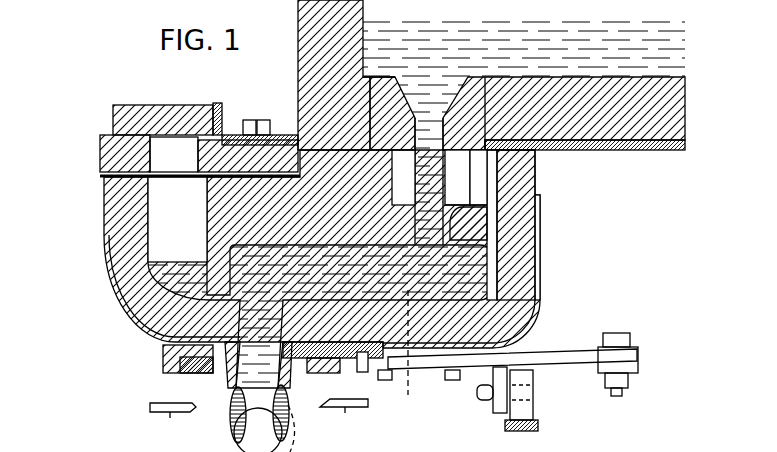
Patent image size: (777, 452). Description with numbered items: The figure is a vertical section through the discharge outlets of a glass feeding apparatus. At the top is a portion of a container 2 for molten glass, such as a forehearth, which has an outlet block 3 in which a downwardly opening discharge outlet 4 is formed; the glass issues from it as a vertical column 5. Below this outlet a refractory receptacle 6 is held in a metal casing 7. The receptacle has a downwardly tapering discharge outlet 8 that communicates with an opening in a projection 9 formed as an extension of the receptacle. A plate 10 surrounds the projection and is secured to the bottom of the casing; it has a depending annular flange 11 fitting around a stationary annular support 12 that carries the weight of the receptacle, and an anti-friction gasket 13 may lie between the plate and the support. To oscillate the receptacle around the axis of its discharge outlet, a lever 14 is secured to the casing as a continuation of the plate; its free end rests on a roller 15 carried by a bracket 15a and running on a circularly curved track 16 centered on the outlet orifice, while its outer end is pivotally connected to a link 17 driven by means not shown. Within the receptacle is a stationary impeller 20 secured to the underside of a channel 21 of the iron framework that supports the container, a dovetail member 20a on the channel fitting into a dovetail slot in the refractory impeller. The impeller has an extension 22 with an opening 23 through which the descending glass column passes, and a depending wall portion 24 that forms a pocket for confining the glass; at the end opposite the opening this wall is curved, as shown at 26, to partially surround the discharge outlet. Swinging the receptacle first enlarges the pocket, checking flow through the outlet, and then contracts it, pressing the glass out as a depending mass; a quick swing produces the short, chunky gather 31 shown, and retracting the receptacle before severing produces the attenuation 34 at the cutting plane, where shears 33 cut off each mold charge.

The container 2 is at (653, 110).
The outlet block 3 is at (417, 122).
The discharge outlet 4 is at (405, 120).
The vertical column of glass 5 is at (446, 172).
The receptacle 6 is at (540, 212).
The metal casing 7 is at (541, 288).
The discharge outlet 8 is at (168, 341).
The projection 9 is at (228, 382).
The plate 10 is at (362, 372).
The depending annular flange 11 is at (170, 368).
The stationary annular support 12 is at (200, 374).
The gasket 13 is at (313, 373).
The lever 14 is at (573, 368).
The roller 15 is at (533, 411).
The bracket 15a is at (480, 410).
The circularly curved track 16 is at (520, 431).
The link 17 is at (640, 352).
The impeller 20 is at (240, 200).
The dovetail member 20a is at (192, 160).
The channel 21 is at (222, 104).
The extension 22 is at (470, 236).
The opening 23 is at (455, 207).
The depending wall portion 24 is at (408, 353).
The curved end of wall portion 26 is at (122, 310).
The gather of glass 31 is at (230, 422).
The shears 33 is at (258, 418).
The attenuation 34 is at (274, 428).